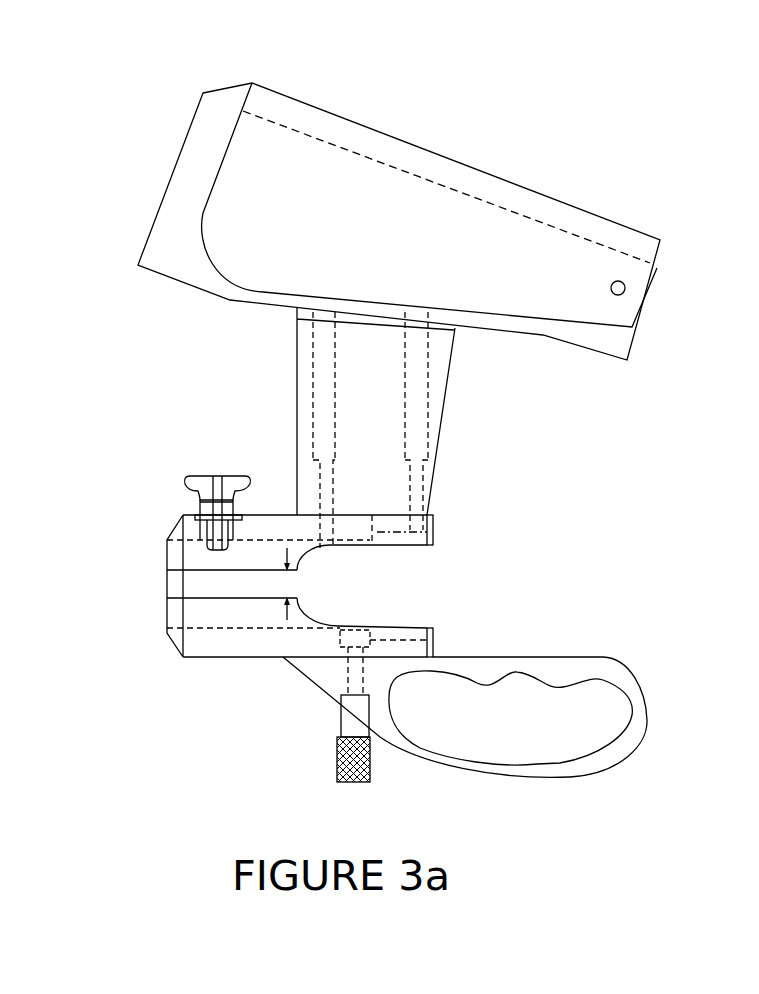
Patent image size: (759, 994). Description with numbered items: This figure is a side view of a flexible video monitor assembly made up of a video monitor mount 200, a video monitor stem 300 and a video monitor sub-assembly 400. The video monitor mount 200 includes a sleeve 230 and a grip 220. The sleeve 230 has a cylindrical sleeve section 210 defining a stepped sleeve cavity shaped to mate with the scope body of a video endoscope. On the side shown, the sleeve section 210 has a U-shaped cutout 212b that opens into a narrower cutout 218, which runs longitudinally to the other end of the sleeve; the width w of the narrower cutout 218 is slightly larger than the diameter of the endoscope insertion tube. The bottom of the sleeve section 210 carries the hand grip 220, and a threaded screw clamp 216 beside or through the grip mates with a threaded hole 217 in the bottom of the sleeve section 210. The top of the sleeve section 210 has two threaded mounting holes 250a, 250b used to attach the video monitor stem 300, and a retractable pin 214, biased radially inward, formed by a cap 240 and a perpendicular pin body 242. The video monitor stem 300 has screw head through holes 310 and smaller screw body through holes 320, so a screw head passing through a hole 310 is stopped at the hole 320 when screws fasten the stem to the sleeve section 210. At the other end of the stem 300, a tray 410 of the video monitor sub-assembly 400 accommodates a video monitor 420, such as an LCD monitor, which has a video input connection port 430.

The video monitor sub-assembly 400 is at (550, 153).
The tray 410 is at (627, 342).
The video monitor 420 is at (625, 237).
The video input connection port 430 is at (609, 289).
The video monitor stem 300 is at (537, 472).
The screw head through holes 310 is at (412, 413).
The screw body through holes 320 is at (413, 487).
The video monitor mount 200 is at (205, 676).
The sleeve section 210 is at (238, 650).
The U-shaped cutout 212b is at (362, 548).
The retractable pin 214 is at (202, 476).
The threaded screw clamp 216 is at (347, 730).
The threaded hole 217 is at (340, 642).
The narrower cutout 218 is at (182, 598).
The hand grip 220 is at (533, 773).
The sleeve 230 is at (160, 540).
The cap 240 is at (243, 481).
The pin body 242 is at (214, 546).
The threaded mounting hole 250a is at (324, 535).
The threaded mounting hole 250b is at (432, 519).